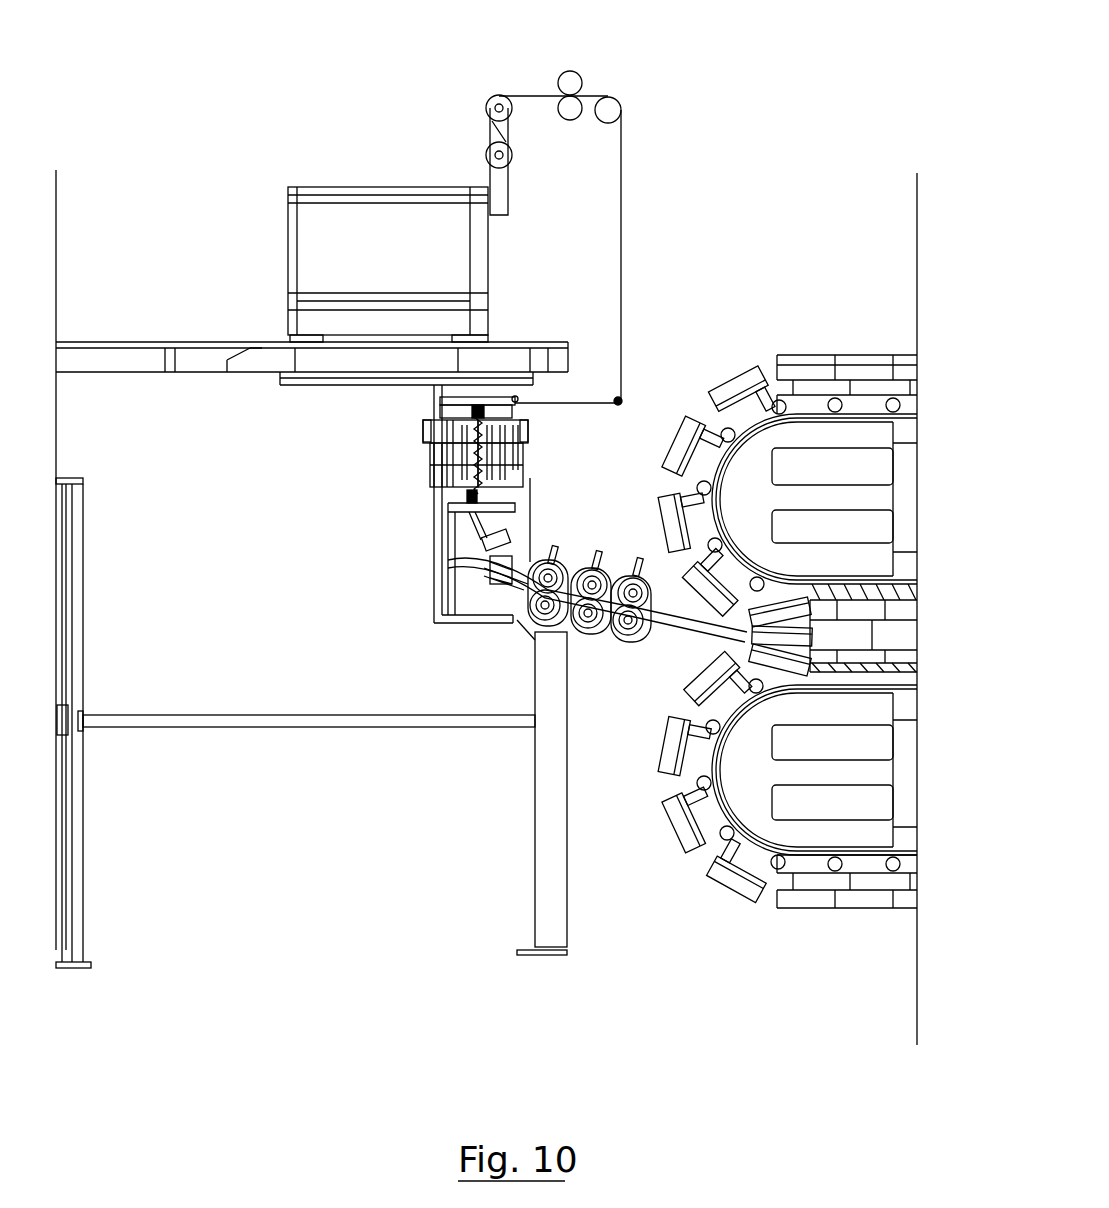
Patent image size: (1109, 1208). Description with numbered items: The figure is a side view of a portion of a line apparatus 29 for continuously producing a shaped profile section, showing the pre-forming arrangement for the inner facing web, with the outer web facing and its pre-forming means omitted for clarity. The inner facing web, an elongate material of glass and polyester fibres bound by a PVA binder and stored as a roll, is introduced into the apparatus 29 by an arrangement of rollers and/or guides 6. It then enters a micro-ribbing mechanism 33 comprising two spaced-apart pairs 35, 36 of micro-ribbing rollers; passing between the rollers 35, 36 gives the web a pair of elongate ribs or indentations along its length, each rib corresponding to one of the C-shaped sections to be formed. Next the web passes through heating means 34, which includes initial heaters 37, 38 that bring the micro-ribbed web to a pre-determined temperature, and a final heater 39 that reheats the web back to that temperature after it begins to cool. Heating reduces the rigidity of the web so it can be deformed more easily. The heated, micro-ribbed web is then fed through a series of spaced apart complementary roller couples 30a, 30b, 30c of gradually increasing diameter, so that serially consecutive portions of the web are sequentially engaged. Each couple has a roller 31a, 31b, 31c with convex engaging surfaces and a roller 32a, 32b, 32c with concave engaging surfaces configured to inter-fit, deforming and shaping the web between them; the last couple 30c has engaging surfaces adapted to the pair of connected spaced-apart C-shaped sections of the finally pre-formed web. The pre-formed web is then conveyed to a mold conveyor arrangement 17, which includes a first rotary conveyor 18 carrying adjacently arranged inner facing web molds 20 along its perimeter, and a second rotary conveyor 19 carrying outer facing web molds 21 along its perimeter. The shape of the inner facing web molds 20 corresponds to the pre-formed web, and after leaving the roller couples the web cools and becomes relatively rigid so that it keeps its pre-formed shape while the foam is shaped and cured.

The rollers and/or guides 6 is at (486, 108).
The mold conveyor arrangement 17 is at (814, 330).
The first rotary conveyor 18 is at (862, 448).
The second rotary conveyor 19 is at (862, 725).
The inner facing web molds 20 is at (727, 364).
The outer facing web molds 21 is at (728, 886).
The line apparatus 29 is at (748, 76).
The complementary roller couple 30a is at (502, 641).
The complementary roller couple 30b is at (608, 650).
The complementary roller couple 30c is at (662, 637).
The roller with convex engaging surfaces 31a is at (548, 562).
The roller with convex engaging surfaces 31b is at (592, 569).
The roller with convex engaging surfaces 31c is at (633, 577).
The roller with concave engaging surfaces 32a is at (533, 628).
The roller with concave engaging surfaces 32b is at (588, 636).
The roller with concave engaging surfaces 32c is at (636, 634).
The micro-ribbing mechanism 33 is at (605, 42).
The heating means 34 is at (385, 493).
The pair of micro-ribbing rollers 35 is at (571, 71).
The pair of micro-ribbing rollers 36 is at (571, 122).
The heater 37 is at (428, 437).
The heater 38 is at (528, 436).
The heater 39 is at (448, 553).